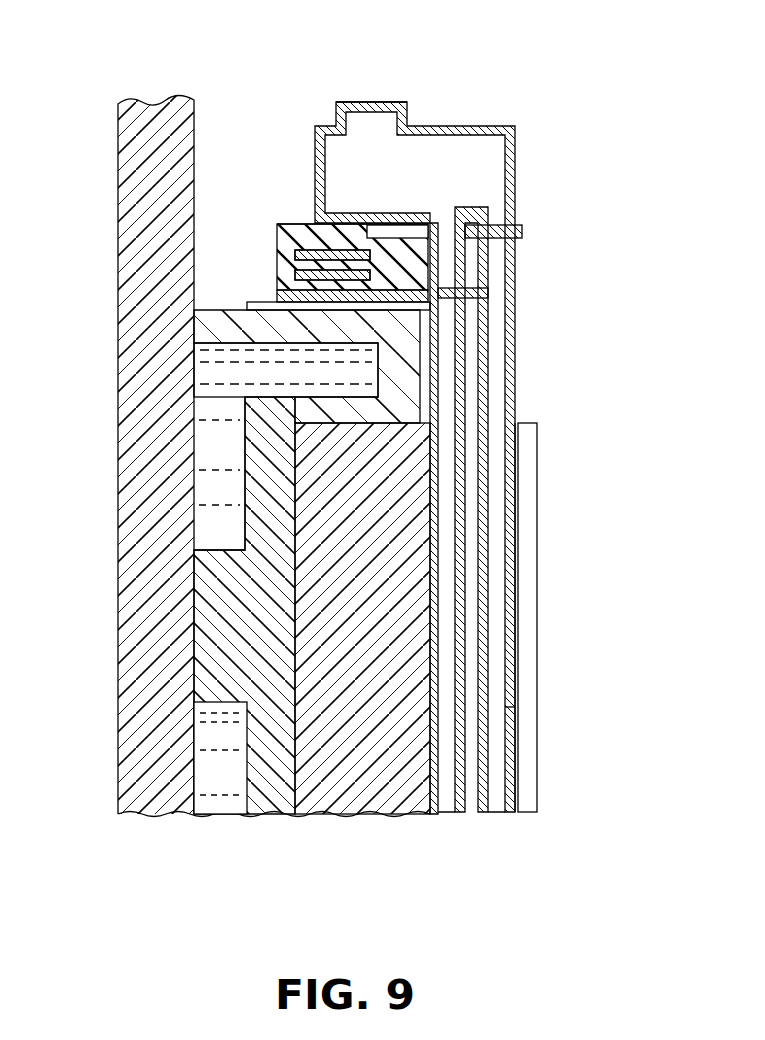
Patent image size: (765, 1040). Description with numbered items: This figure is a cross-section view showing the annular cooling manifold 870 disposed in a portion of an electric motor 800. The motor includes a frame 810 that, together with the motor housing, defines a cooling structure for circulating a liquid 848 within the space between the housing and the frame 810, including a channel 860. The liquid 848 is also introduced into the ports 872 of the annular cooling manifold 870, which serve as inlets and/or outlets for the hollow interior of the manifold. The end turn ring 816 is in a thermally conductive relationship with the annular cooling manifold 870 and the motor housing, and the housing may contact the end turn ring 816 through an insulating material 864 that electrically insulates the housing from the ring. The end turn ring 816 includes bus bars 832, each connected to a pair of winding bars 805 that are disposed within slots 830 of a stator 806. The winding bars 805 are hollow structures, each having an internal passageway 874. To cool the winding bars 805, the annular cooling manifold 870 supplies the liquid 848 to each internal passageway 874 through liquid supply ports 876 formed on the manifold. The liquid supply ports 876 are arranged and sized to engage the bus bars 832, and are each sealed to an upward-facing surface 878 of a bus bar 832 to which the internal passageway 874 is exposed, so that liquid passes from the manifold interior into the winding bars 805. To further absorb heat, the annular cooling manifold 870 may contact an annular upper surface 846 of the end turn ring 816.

The electric motor 800 is at (270, 67).
The winding bars 805 is at (508, 707).
The stator 806 is at (213, 622).
The frame 810 is at (142, 448).
The end turn ring 816 is at (266, 257).
The slots 830 is at (518, 600).
The bus bars 832 is at (522, 232).
The annular upper surface 846 is at (293, 222).
The liquid 848 is at (217, 512).
The channel 860 is at (253, 367).
The insulating material 864 is at (262, 302).
The annular cooling manifold 870 is at (475, 122).
The ports 872 is at (368, 102).
The internal passageway 874 is at (445, 812).
The liquid supply ports 876 is at (515, 186).
The upward-facing surface 878 is at (404, 224).